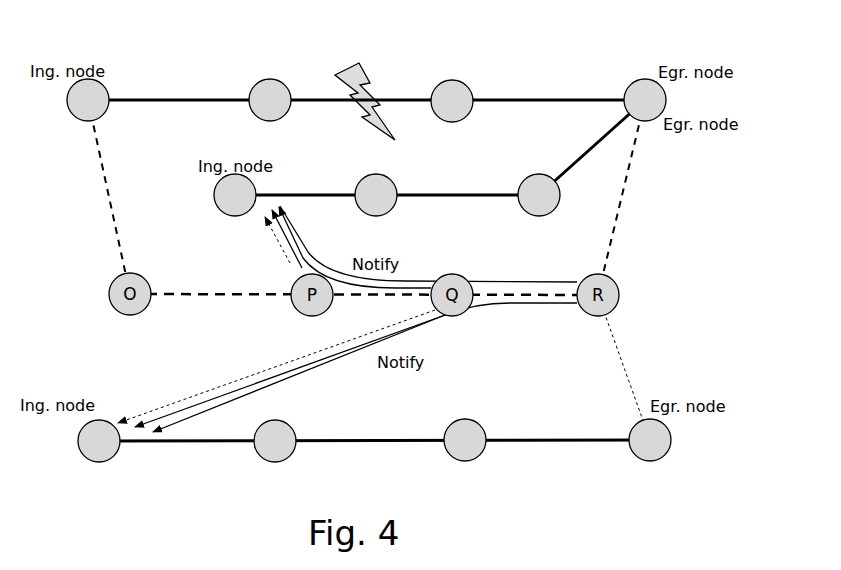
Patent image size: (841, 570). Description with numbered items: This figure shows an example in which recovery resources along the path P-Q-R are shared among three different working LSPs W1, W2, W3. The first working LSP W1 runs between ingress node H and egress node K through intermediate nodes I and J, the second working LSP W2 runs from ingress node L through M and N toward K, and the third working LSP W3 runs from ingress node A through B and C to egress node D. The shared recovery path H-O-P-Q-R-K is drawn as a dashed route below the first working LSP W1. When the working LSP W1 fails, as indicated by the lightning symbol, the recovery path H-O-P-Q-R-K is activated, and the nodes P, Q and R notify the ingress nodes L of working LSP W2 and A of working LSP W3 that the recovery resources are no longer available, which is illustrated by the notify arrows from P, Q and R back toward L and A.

The working LSP W1 is at (157, 100).
The working LSP W2 is at (293, 194).
The working LSP W3 is at (342, 440).